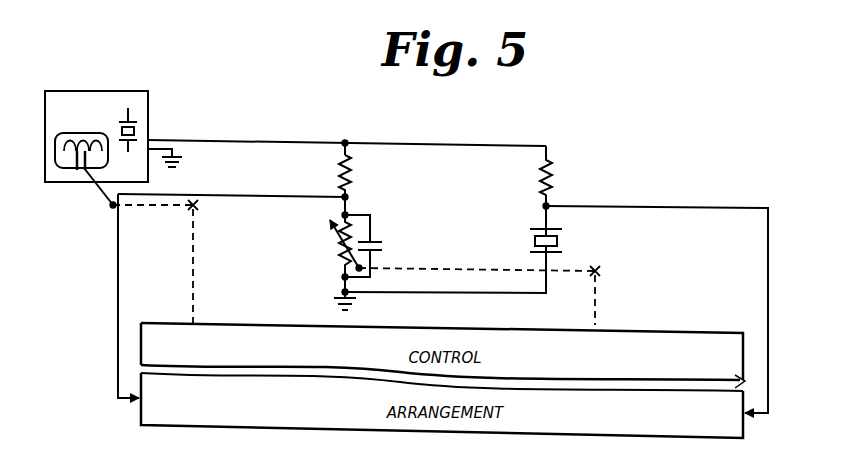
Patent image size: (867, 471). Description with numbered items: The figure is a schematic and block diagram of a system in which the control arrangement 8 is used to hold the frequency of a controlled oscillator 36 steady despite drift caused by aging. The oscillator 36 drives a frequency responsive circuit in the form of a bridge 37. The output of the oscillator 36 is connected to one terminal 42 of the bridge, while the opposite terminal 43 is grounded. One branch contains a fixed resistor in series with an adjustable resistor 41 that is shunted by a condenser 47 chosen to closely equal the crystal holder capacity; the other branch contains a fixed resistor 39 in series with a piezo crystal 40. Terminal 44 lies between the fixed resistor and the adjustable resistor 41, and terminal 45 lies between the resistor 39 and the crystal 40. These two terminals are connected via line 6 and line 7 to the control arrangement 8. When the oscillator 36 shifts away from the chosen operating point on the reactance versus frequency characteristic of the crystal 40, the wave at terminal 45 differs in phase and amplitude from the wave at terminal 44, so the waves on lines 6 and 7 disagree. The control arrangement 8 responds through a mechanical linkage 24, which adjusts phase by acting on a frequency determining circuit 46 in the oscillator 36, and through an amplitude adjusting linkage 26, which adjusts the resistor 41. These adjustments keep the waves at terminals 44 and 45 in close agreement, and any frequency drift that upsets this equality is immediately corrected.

The oscillator 36 is at (148, 122).
The frequency determining circuit 46 is at (66, 154).
The terminal 42 is at (345, 143).
The bridge 37 is at (450, 167).
The terminal 44 is at (345, 197).
The adjustable resistor 41 is at (343, 250).
The condenser 47 is at (382, 246).
The terminal 43 is at (345, 292).
The fixed resistor 39 is at (546, 178).
The terminal 45 is at (546, 206).
The piezo crystal 40 is at (530, 240).
The mechanical linkage 24 is at (193, 254).
The amplitude adjusting linkage 26 is at (595, 318).
The line 6 is at (118, 292).
The line 7 is at (768, 287).
The control arrangement 8 is at (745, 381).